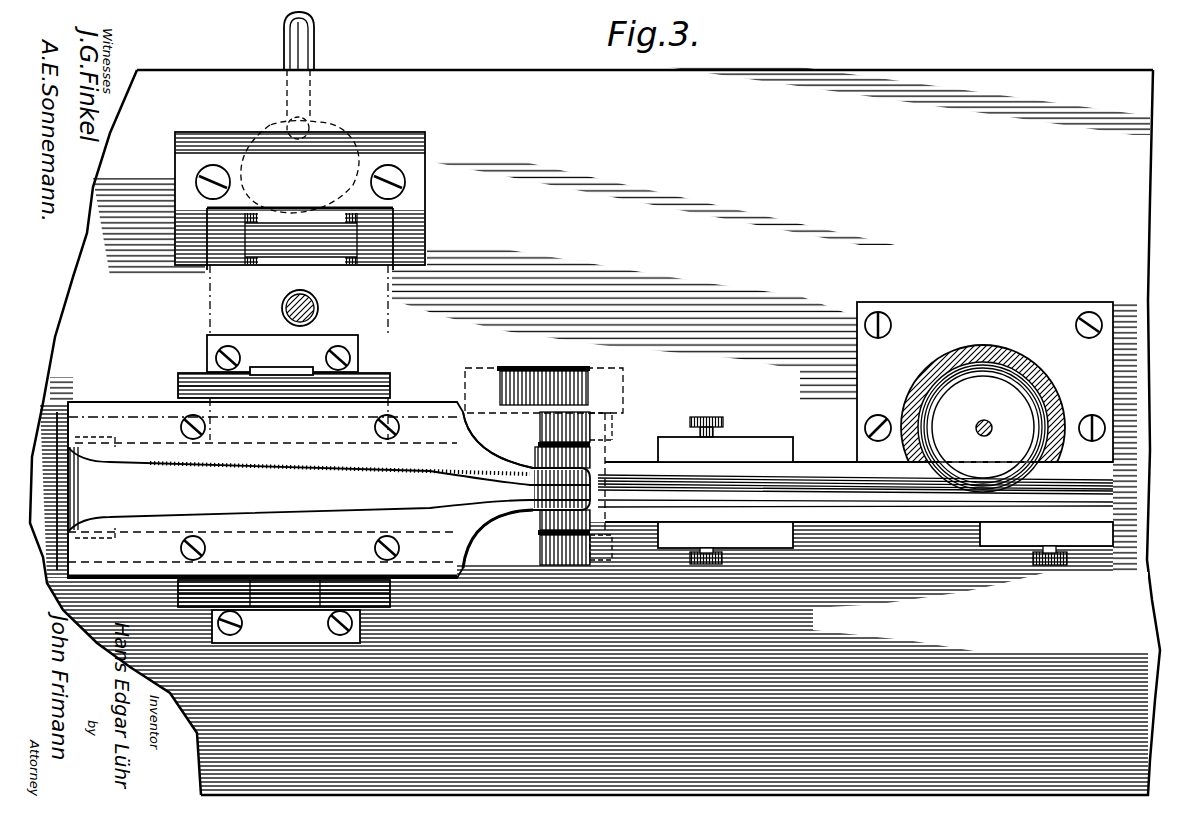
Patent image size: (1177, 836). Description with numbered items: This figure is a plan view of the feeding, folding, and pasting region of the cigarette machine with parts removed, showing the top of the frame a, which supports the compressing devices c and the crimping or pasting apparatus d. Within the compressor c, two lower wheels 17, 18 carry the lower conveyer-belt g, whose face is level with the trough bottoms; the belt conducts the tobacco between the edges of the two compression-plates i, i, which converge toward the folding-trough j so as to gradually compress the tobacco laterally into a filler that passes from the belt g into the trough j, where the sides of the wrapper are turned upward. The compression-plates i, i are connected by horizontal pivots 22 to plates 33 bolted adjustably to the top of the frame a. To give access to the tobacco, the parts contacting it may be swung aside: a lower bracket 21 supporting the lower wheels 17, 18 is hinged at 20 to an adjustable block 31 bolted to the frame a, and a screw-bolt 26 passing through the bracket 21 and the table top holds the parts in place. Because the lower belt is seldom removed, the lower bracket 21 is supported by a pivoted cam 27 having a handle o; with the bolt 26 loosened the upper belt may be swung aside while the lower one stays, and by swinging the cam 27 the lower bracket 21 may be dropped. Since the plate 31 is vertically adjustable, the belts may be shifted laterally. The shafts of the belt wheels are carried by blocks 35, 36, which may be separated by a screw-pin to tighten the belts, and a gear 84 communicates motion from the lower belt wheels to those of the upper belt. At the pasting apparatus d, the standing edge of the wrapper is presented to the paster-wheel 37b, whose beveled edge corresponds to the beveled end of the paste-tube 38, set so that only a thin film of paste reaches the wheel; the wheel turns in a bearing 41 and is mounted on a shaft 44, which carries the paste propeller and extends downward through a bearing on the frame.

The handle o is at (312, 47).
The adjustable block 31 is at (238, 125).
The pivoted cam 27 is at (300, 167).
The hinge 20 is at (287, 243).
The lower bracket 21 is at (207, 300).
The screw-bolt 26 is at (320, 310).
The plates 33 is at (352, 360).
The horizontal pivots 22 is at (177, 391).
The block 35 is at (87, 417).
The lower wheel 17 is at (52, 555).
The conveyer-belt g is at (329, 489).
The compression-plates i is at (148, 457).
The block 36 is at (498, 485).
The gear 84 is at (583, 380).
The lower wheel 18 is at (610, 537).
The compressing devices c is at (859, 473).
The folding-trough j is at (813, 490).
The frame a is at (666, 255).
The bearing 41 is at (985, 382).
The paste-tube 38 is at (1020, 372).
The paster-wheel 37b is at (938, 463).
The shaft 44 is at (986, 421).
The crimping or pasting apparatus d is at (1079, 388).